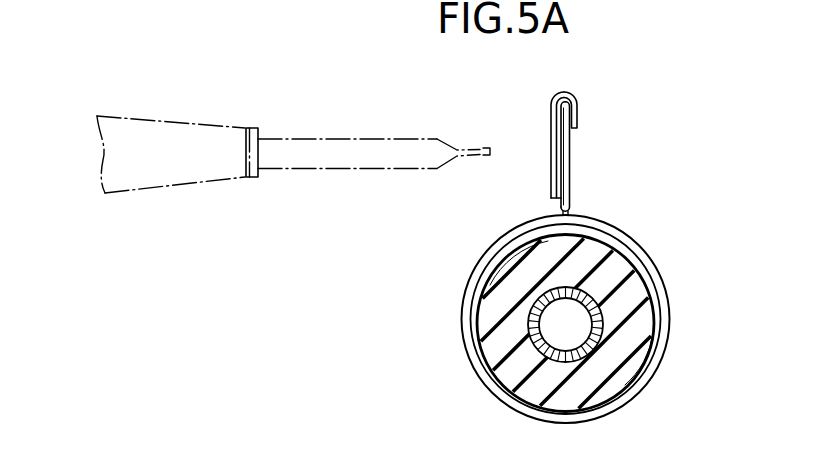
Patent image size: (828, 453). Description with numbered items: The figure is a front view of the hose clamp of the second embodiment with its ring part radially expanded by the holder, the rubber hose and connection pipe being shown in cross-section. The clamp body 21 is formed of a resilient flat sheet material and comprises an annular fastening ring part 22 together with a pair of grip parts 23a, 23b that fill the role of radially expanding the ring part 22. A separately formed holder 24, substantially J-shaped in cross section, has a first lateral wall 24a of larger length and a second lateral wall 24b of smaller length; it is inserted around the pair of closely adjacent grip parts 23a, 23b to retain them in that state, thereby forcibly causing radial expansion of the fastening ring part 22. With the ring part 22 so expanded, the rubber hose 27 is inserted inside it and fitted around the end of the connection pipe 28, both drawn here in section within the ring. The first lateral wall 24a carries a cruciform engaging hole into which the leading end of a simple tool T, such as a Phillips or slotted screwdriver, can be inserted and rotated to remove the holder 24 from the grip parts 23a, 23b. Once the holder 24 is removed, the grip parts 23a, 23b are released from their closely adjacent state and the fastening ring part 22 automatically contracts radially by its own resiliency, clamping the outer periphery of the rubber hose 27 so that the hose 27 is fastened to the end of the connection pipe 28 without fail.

The tool T is at (293, 170).
The clamp body 21 is at (438, 292).
The fastening ring part 22 is at (645, 388).
The grip part 23a is at (561, 170).
The grip part 23b is at (571, 162).
The holder 24 is at (571, 128).
The first lateral wall 24a is at (551, 122).
The second lateral wall 24b is at (578, 122).
The rubber hose 27 is at (628, 288).
The connection pipe 28 is at (531, 326).